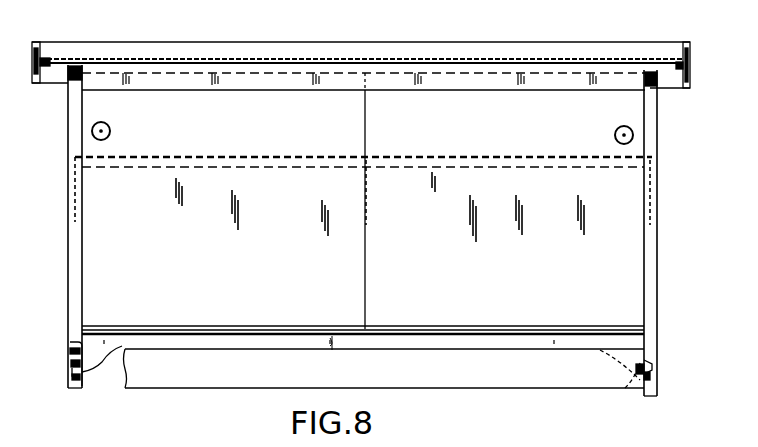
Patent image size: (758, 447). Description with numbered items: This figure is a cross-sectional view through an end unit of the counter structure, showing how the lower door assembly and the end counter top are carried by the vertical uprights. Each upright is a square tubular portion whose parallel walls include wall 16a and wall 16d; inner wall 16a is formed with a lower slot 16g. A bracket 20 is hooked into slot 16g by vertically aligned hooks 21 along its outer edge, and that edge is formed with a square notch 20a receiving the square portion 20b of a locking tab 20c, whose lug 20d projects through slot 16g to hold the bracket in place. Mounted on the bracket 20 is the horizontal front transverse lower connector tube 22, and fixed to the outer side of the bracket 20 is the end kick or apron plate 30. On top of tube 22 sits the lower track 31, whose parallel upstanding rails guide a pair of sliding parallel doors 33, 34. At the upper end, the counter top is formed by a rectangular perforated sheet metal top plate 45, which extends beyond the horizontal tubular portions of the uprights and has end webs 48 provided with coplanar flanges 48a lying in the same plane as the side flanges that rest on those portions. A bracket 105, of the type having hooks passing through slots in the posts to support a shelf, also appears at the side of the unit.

The end web 48 is at (43, 64).
The coplanar flange 48a is at (53, 63).
The top perforated sheet metal plate 45 is at (219, 61).
The wall of vertical portion 16d is at (69, 278).
The bracket 105 is at (645, 213).
The sliding door 33 is at (214, 267).
The sliding door 34 is at (441, 267).
The lower track 31 is at (446, 332).
The front transverse lower connector tube 22 is at (293, 340).
The bracket 20 is at (102, 353).
The end kick or apron plate 30 is at (248, 376).
The hook 21 is at (72, 352).
The lower slot 16g is at (70, 357).
The wall of vertical portion 16a is at (82, 382).
The square portion of locking tab 20b is at (648, 362).
The lug 20d is at (660, 364).
The locking tab 20c is at (650, 378).
The square notch 20a is at (650, 367).